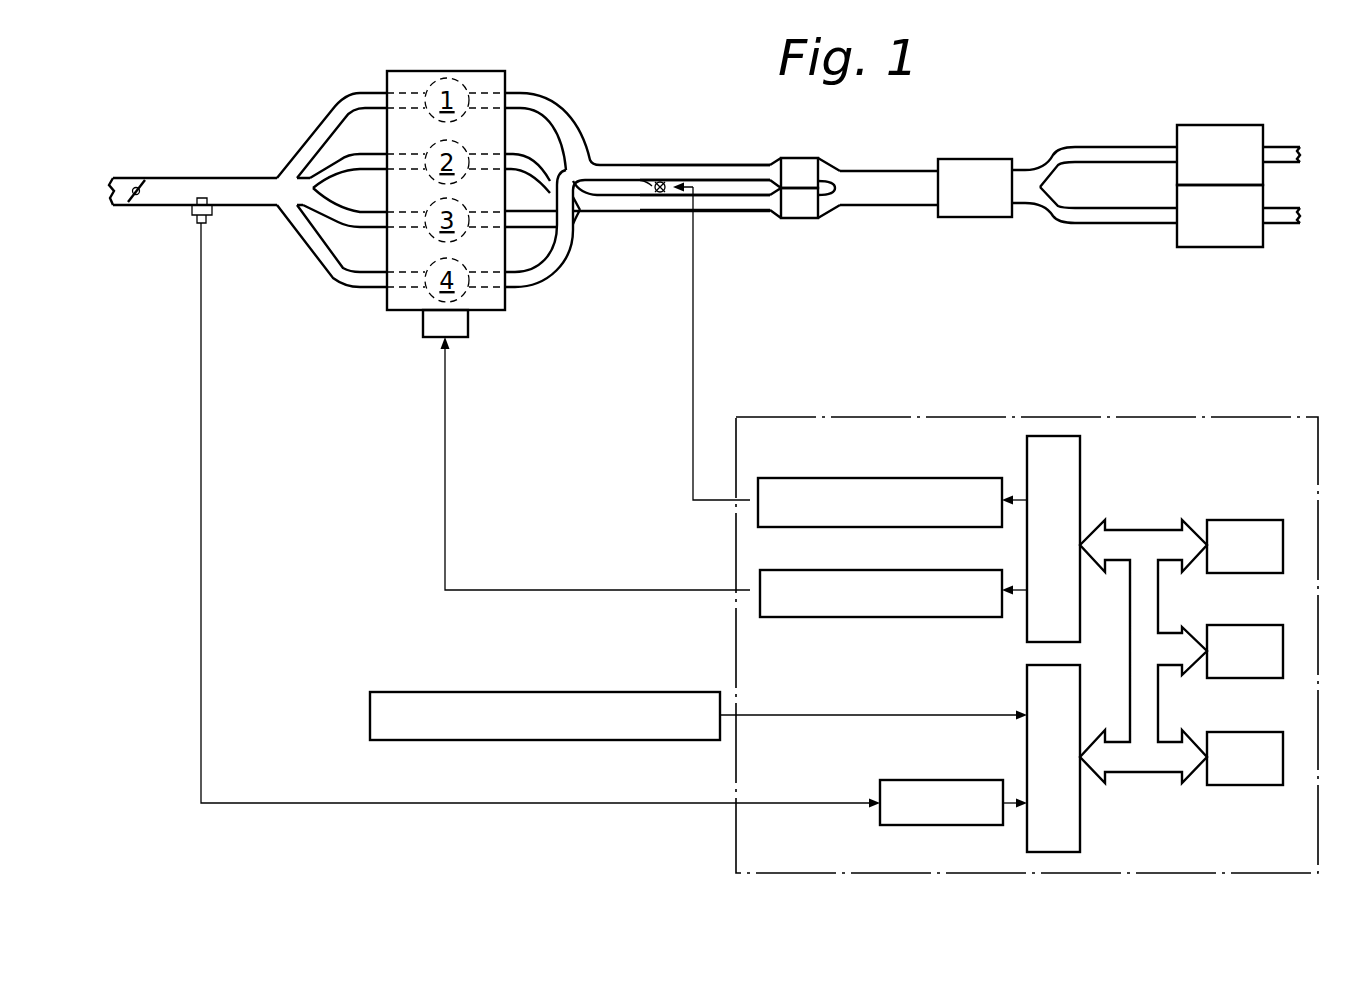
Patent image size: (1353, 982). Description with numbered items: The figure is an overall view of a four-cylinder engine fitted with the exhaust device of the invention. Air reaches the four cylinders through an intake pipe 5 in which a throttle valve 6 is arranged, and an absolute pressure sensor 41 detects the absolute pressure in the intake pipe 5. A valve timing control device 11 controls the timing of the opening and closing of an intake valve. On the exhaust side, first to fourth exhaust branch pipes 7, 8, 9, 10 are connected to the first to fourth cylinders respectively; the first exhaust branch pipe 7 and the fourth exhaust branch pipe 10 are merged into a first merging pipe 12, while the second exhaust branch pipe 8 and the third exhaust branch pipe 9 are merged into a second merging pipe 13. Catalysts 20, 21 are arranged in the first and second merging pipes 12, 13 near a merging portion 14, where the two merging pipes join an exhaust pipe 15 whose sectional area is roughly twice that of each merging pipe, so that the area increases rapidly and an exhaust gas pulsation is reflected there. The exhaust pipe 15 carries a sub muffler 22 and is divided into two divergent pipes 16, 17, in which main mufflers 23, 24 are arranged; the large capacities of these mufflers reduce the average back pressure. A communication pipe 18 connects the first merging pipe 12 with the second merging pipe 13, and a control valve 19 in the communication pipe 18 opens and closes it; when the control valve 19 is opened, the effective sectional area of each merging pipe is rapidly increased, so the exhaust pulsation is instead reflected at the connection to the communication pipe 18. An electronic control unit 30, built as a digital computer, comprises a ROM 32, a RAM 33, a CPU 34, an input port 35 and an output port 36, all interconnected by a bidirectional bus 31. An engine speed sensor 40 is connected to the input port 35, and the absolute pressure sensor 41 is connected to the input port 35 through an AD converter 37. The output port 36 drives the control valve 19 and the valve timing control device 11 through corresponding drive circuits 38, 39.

The intake pipe 5 is at (183, 176).
The throttle valve 6 is at (131, 207).
The absolute pressure sensor 41 is at (196, 222).
The first exhaust branch pipe 7 is at (531, 92).
The second exhaust branch pipe 8 is at (508, 152).
The third exhaust branch pipe 9 is at (545, 230).
The fourth exhaust branch pipe 10 is at (543, 278).
The valve timing control device 11 is at (420, 325).
The first merging pipe 12 is at (694, 163).
The second merging pipe 13 is at (628, 212).
The communication pipe 18 is at (663, 196).
The control valve 19 is at (652, 178).
The catalyst 20 is at (800, 156).
The catalyst 21 is at (800, 220).
The merging portion 14 is at (838, 180).
The exhaust pipe 15 is at (918, 170).
The sub muffler 22 is at (976, 218).
The divergent pipe 16 is at (1112, 146).
The divergent pipe 17 is at (1104, 224).
The main muffler 23 is at (1232, 130).
The main muffler 24 is at (1225, 248).
The electronic control unit 30 is at (1193, 412).
The bidirectional bus 31 is at (1147, 529).
The ROM 32 is at (1250, 519).
The RAM 33 is at (1245, 624).
The CPU 34 is at (1245, 731).
The input port 35 is at (1082, 678).
The output port 36 is at (1082, 458).
The AD converter 37 is at (937, 779).
The drive circuit 38 is at (963, 477).
The drive circuit 39 is at (958, 570).
The engine speed sensor 40 is at (369, 716).